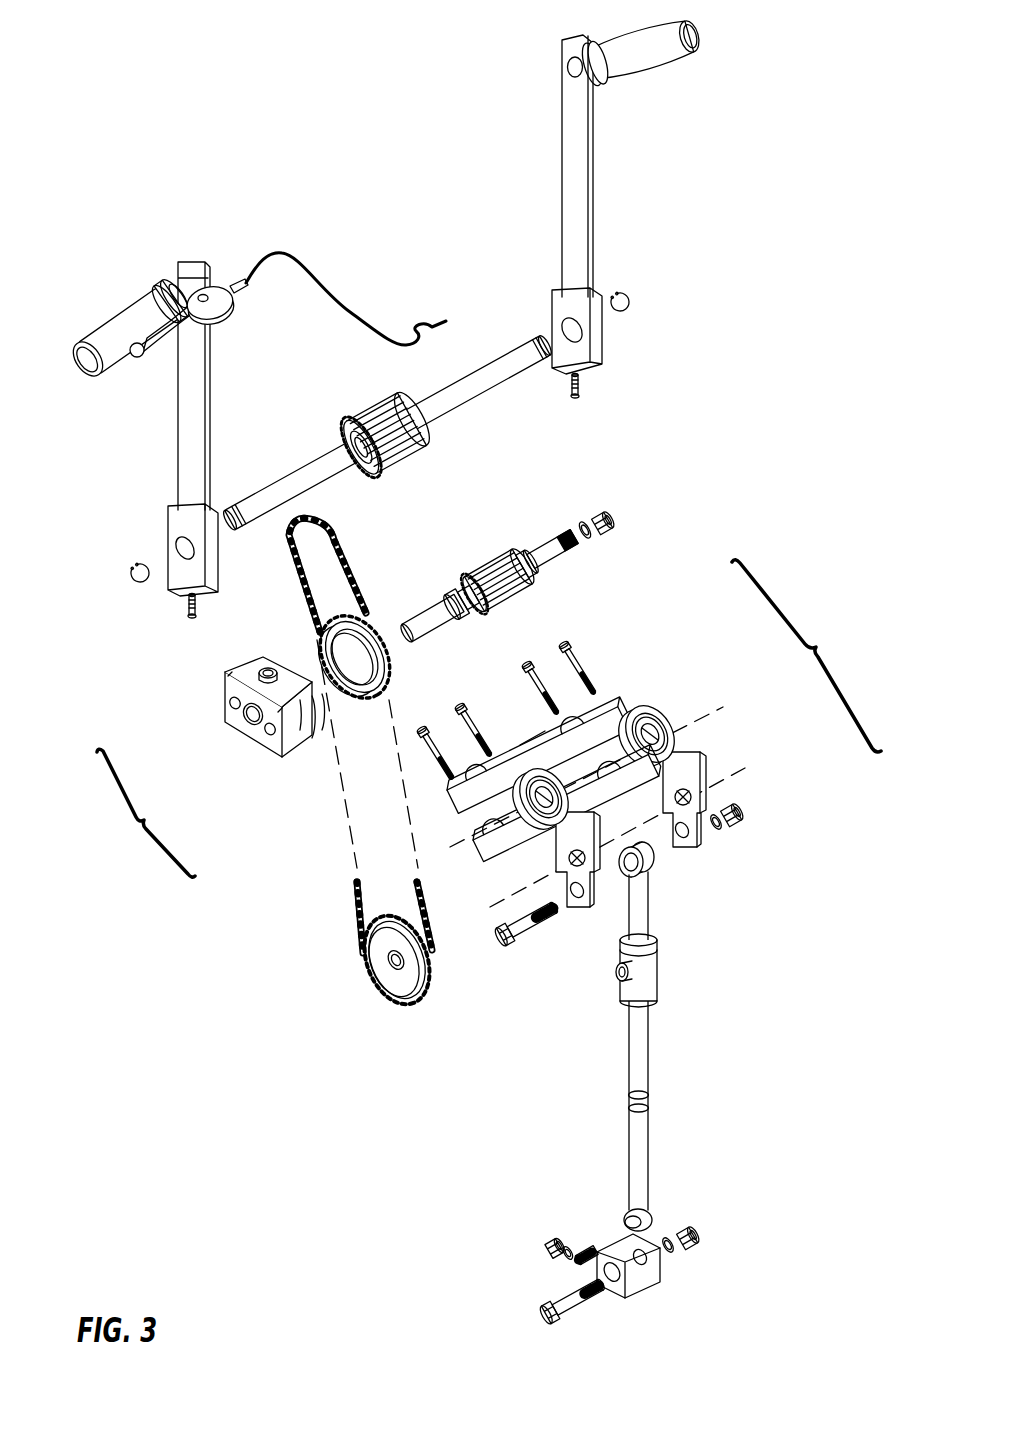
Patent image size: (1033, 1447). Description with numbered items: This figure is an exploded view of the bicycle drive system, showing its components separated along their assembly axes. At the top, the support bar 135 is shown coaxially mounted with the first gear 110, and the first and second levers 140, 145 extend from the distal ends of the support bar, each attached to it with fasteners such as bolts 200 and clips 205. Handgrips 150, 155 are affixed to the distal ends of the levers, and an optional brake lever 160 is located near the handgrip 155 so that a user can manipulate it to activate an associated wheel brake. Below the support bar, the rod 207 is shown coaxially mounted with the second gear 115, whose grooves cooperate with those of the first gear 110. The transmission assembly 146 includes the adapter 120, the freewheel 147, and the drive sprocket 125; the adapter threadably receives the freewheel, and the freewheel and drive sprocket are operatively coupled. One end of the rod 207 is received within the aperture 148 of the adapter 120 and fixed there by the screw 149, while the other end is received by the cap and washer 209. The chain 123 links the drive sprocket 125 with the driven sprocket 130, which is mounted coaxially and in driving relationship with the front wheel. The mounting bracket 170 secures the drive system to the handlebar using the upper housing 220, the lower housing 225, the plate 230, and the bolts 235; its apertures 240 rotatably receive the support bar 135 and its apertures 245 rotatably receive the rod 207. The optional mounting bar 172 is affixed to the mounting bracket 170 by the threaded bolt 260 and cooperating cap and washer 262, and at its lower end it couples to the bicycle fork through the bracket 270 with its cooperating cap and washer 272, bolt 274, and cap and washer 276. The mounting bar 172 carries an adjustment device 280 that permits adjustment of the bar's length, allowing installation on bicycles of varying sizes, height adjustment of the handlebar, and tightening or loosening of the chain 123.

The first gear 110 is at (373, 418).
The second gear 115 is at (500, 553).
The adapter 120 is at (277, 742).
The chain 123 is at (355, 912).
The drive sprocket 125 is at (373, 630).
The driven sprocket 130 is at (380, 983).
The support bar 135 is at (485, 372).
The first lever 140 is at (596, 187).
The second lever 145 is at (185, 468).
The transmission assembly 146 is at (143, 813).
The freewheel 147 is at (532, 742).
The aperture 148 is at (246, 716).
The screw 149 is at (266, 672).
The handgrip 150 is at (657, 58).
The handgrip 155 is at (140, 290).
The brake lever 160 is at (215, 290).
The mounting bracket 170 is at (806, 656).
The mounting bar 172 is at (650, 1066).
The bolts 200 is at (587, 396).
The clips 205 is at (633, 302).
The rod 207 is at (549, 536).
The cap and washer 209 is at (622, 545).
The upper housing 220 is at (625, 705).
The lower housing 225 is at (475, 876).
The plate 230 is at (530, 740).
The bolts 235 is at (599, 661).
The apertures 240 is at (715, 698).
The apertures 245 is at (748, 766).
The threaded bolt 260 is at (538, 928).
The cap and washer 262 is at (740, 838).
The bracket 270 is at (632, 1292).
The cap and washer 272 is at (550, 1228).
The bolt 274 is at (558, 1288).
The cap and washer 276 is at (707, 1223).
The adjustment device 280 is at (658, 974).